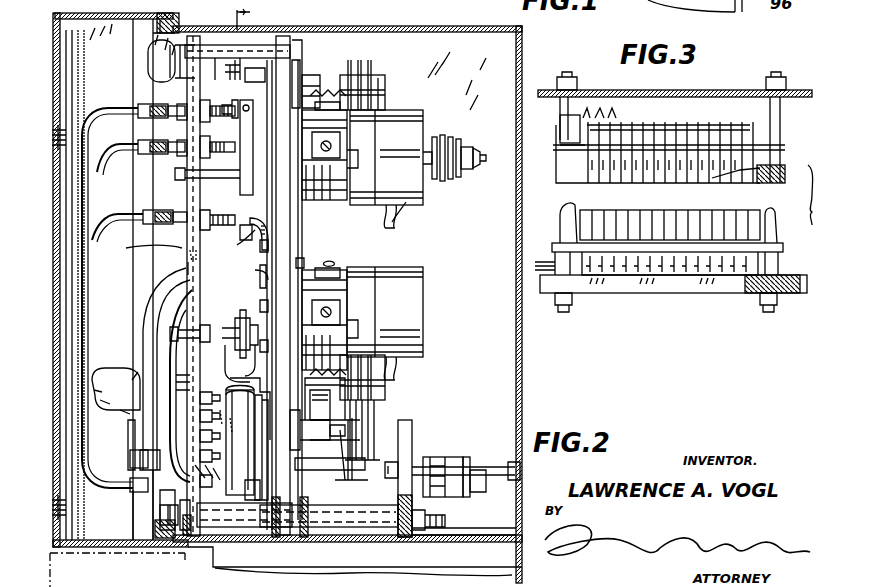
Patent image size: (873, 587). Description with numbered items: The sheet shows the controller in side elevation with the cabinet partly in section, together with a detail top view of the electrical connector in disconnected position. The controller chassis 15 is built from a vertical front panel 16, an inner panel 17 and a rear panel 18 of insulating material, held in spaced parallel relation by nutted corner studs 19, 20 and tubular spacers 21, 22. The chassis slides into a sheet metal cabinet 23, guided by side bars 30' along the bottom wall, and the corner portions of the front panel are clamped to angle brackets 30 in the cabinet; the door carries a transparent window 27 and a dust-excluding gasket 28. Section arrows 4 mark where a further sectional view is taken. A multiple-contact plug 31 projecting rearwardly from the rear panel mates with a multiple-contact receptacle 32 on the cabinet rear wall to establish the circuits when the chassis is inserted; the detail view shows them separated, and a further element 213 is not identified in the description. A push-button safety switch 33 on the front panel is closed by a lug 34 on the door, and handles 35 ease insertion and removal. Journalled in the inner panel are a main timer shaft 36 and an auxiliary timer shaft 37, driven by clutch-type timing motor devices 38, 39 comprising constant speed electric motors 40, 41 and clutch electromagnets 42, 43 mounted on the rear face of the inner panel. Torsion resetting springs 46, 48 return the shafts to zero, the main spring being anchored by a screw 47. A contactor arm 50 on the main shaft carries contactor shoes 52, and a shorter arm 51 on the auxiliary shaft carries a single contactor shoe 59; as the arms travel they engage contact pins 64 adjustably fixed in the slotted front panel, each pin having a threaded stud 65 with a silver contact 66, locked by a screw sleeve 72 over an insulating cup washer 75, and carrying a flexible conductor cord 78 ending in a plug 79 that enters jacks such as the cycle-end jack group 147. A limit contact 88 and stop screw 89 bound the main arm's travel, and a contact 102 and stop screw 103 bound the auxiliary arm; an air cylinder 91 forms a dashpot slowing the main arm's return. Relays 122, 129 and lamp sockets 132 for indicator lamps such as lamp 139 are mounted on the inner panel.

In FIG. 2, the section line 4 is at (226, 578).
In FIG. 2, the controller chassis 15 is at (176, 252).
In FIG. 2, the front panel 16 is at (188, 268).
In FIG. 2, the inner panel 17 is at (283, 36).
In FIG. 2, the rear panel 18 is at (412, 425).
In FIG. 3, the rear panel 18 is at (676, 293).
In FIG. 2, the corner stud 19 is at (308, 58).
In FIG. 2, the corner stud 20 is at (440, 528).
In FIG. 2, the tubular spacer 21 is at (230, 38).
In FIG. 2, the tubular spacer 22 is at (350, 528).
In FIG. 2, the sheet metal cabinet 23 is at (432, 21).
In FIG. 3, the sheet metal cabinet 23 is at (670, 86).
In FIG. 2, the transparent window 27 is at (66, 290).
In FIG. 2, the dust-excluding gasket 28 is at (147, 270).
In FIG. 2, the angle bracket 30 is at (182, 16).
In FIG. 2, the chassis-guiding side bar 30' is at (464, 550).
In FIG. 2, the multiple-contact plug 31 is at (433, 458).
In FIG. 3, the multiple-contact plug 31 is at (750, 228).
In FIG. 2, the multiple-contact receptacle 32 is at (466, 456).
In FIG. 3, the multiple-contact receptacle 32 is at (776, 165).
In FIG. 2, the safety switch 33 is at (170, 500).
In FIG. 2, the lug 34 is at (158, 512).
In FIG. 2, the handle 35 is at (152, 318).
In FIG. 2, the main timer shaft 36 is at (230, 370).
In FIG. 2, the auxiliary timer shaft 37 is at (216, 178).
In FIG. 2, the timing motor device 38 is at (410, 269).
In FIG. 2, the timing motor device 39 is at (411, 106).
In FIG. 2, the electric motor 40 is at (423, 340).
In FIG. 2, the electric motor 41 is at (410, 203).
In FIG. 2, the clutch electromagnet 42 is at (344, 270).
In FIG. 2, the clutch electromagnet 43 is at (302, 100).
In FIG. 2, the resetting spring 46 is at (260, 440).
In FIG. 2, the screw 47 is at (244, 515).
In FIG. 2, the resetting spring 48 is at (256, 270).
In FIG. 2, the contactor arm 50 is at (256, 315).
In FIG. 2, the contactor arm 51 is at (253, 118).
In FIG. 2, the contactor shoe 52 is at (230, 320).
In FIG. 2, the contactor shoe 59 is at (236, 104).
In FIG. 2, the contact pin 64 is at (149, 98).
In FIG. 2, the threaded stud 65 is at (217, 230).
In FIG. 2, the silver contact 66 is at (251, 234).
In FIG. 2, the screw sleeve 72 is at (148, 158).
In FIG. 2, the insulating cup washer 75 is at (182, 138).
In FIG. 2, the conductor cord 78 is at (95, 126).
In FIG. 2, the plug 79 is at (142, 386).
In FIG. 2, the resiliently mounted contact 88 is at (235, 405).
In FIG. 2, the stop screw 89 is at (208, 436).
In FIG. 2, the air cylinder 91 is at (243, 443).
In FIG. 2, the resiliently mounted contact 102 is at (222, 248).
In FIG. 2, the stop screw 103 is at (300, 258).
In FIG. 2, the relay 122 is at (378, 78).
In FIG. 2, the relay 129 is at (378, 398).
In FIG. 2, the lamp socket 132 is at (237, 62).
In FIG. 2, the indicator lamp 139 is at (162, 72).
In FIG. 2, the jack group 147 is at (178, 390).
In FIG. 2, the connector 213 is at (447, 136).